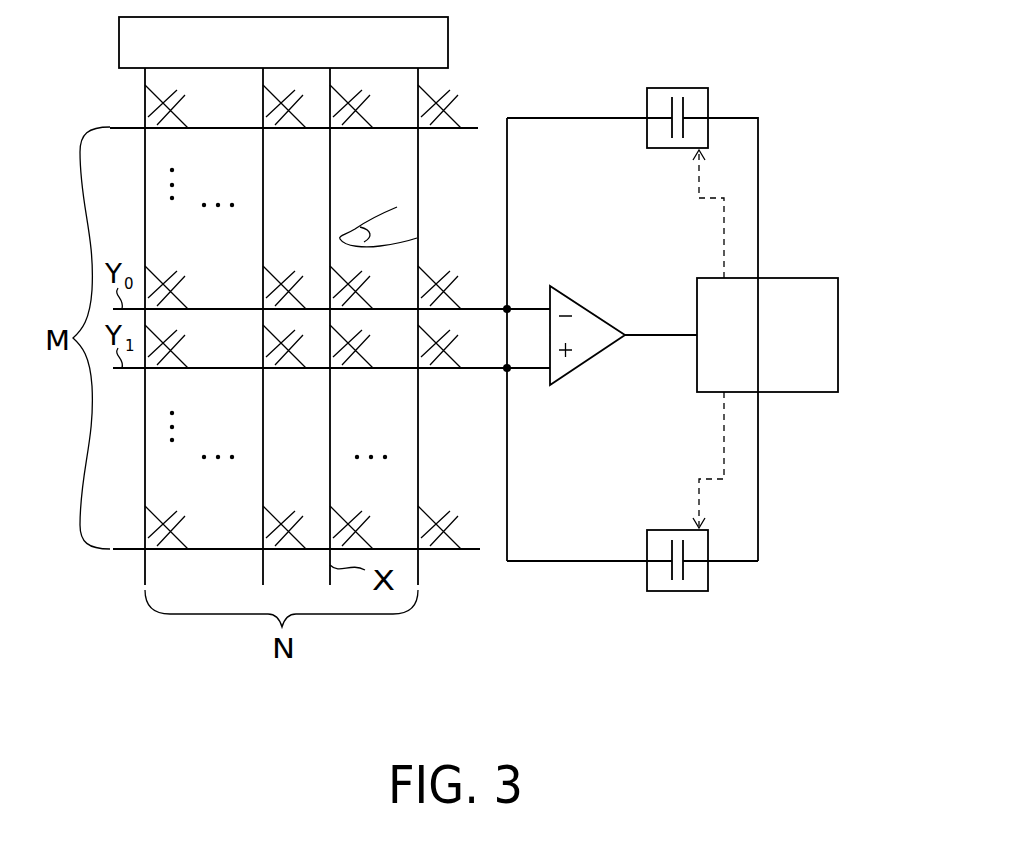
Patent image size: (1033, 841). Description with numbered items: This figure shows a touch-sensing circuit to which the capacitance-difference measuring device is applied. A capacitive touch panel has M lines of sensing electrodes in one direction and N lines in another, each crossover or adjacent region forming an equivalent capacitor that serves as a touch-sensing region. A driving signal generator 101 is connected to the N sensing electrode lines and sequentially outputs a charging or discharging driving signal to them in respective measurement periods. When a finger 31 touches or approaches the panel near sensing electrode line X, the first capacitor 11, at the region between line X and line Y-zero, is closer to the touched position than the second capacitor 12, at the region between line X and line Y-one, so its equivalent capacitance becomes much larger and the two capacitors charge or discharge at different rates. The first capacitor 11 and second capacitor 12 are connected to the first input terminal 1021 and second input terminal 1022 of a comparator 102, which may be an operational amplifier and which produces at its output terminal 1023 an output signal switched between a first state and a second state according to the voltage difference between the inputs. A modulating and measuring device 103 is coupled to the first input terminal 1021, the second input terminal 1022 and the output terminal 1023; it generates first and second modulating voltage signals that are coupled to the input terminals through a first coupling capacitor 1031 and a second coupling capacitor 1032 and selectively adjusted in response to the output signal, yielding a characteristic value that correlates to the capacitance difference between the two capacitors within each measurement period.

The driving signal generator 101 is at (450, 42).
The finger 31 is at (381, 209).
The first capacitor 11 is at (361, 287).
The second capacitor 12 is at (362, 346).
The first input terminal 1021 is at (480, 305).
The second input terminal 1022 is at (478, 372).
The comparator 102 is at (590, 362).
The output terminal 1023 is at (651, 333).
The modulating and measuring device 103 is at (700, 400).
The first coupling capacitor 1031 is at (658, 92).
The second coupling capacitor 1032 is at (658, 540).